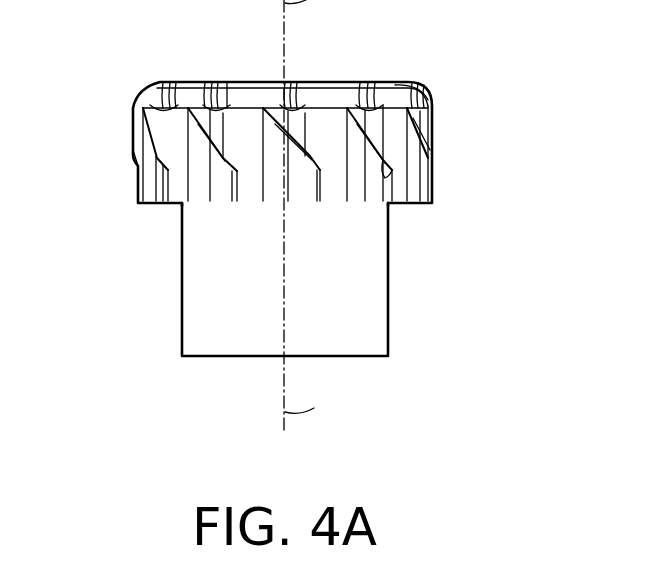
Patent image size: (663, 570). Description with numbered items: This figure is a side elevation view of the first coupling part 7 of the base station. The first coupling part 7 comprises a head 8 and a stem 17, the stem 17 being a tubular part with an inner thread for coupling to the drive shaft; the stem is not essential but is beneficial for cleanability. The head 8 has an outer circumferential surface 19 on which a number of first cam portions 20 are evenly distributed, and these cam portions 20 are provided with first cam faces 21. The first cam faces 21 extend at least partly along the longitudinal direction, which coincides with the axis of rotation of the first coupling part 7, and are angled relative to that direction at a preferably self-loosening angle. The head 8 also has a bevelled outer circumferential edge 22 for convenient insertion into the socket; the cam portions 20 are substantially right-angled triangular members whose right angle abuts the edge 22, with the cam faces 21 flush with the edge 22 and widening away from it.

The first coupling part 7 is at (432, 302).
The head 8 is at (172, 80).
The stem 17 is at (189, 306).
The outer circumferential surface 19 is at (131, 133).
The first cam portions 20 is at (228, 80).
The first cam faces 21 is at (385, 172).
The bevelled outer circumferential edge 22 is at (418, 92).